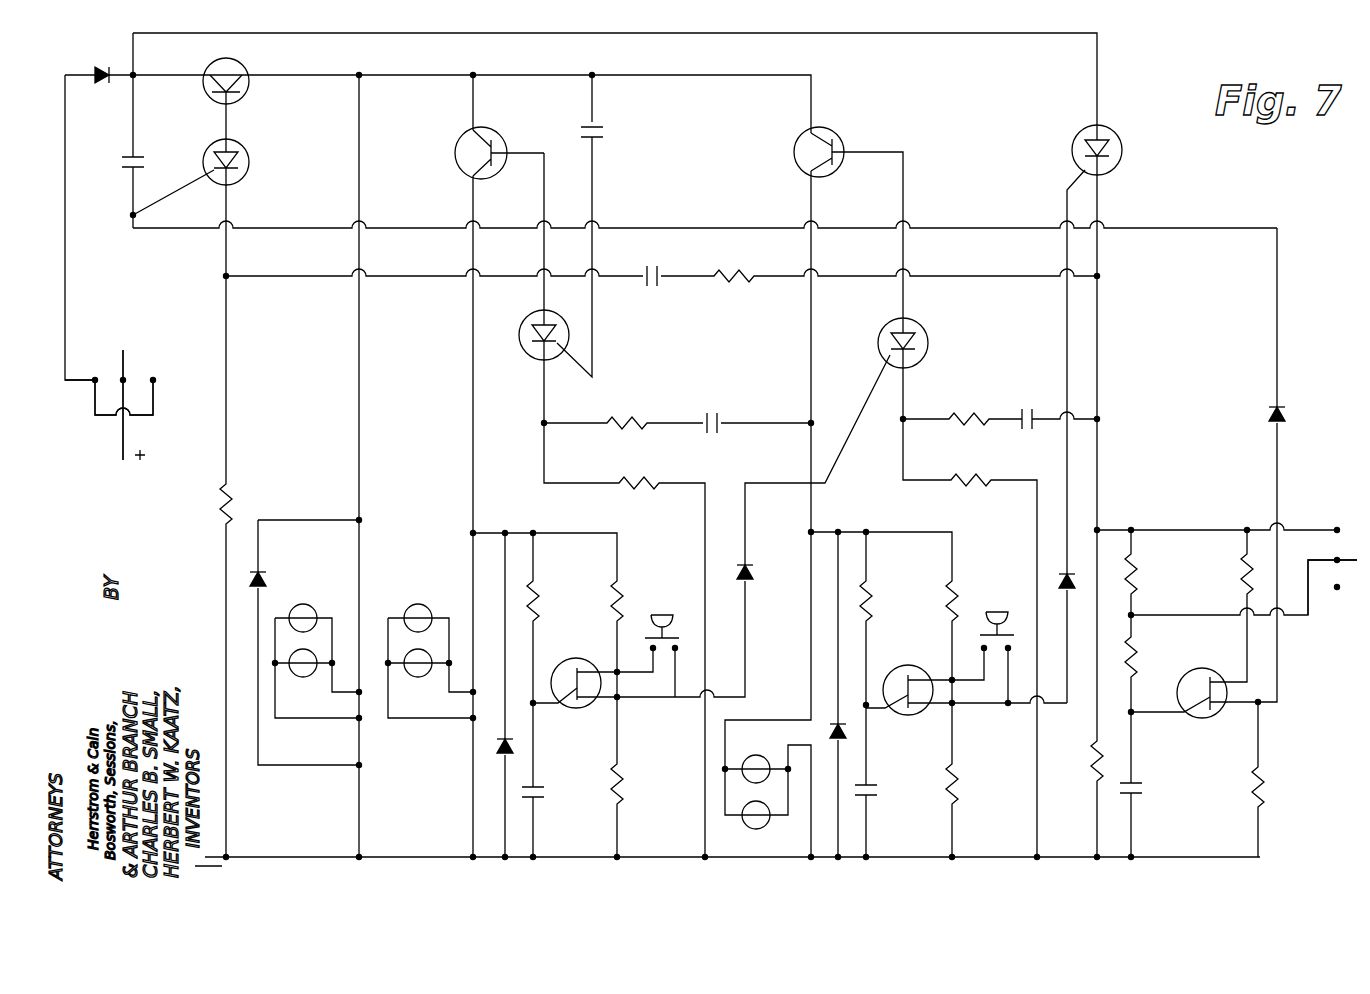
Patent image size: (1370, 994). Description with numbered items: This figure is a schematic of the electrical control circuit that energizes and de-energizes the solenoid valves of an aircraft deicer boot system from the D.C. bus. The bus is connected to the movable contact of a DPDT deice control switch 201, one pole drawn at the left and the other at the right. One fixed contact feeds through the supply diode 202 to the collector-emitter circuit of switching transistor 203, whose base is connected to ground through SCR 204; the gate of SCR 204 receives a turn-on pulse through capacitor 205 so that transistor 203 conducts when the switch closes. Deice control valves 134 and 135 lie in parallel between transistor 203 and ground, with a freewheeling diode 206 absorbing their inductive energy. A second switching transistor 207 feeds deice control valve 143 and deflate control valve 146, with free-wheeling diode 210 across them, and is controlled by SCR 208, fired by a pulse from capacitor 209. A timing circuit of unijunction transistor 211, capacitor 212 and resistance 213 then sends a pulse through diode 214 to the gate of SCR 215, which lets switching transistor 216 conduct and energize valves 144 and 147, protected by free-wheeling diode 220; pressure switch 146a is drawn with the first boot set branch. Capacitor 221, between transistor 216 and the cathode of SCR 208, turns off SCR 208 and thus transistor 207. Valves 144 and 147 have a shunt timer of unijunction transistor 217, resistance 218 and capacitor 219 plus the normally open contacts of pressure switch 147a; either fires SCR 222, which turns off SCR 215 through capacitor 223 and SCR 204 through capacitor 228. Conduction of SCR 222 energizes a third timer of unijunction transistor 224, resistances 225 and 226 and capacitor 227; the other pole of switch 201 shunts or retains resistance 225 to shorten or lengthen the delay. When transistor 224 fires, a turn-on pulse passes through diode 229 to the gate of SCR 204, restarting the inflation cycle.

The DPDT deice control switch 201 is at (146, 414).
The supply diode 202 is at (104, 84).
The switching transistor 203 is at (250, 64).
The SCR 204 is at (249, 165).
The capacitor 205 is at (126, 172).
The freewheeling diode 206 is at (266, 582).
The second switching transistor 207 is at (498, 132).
The SCR 208 is at (530, 352).
The capacitor 209 is at (604, 132).
The free-wheeling diode 210 is at (495, 747).
The unijunction transistor 211 is at (588, 640).
The capacitor 212 is at (545, 792).
The resistance 213 is at (540, 602).
The diode 214 is at (750, 582).
The SCR 215 is at (927, 330).
The switching transistor 216 is at (836, 135).
The unijunction transistor 217 is at (912, 665).
The resistance 218 is at (872, 602).
The capacitor 219 is at (876, 790).
The free-wheeling diode 220 is at (847, 732).
The capacitor 221 is at (714, 408).
The SCR 222 is at (1120, 155).
The capacitor 223 is at (1032, 388).
The unijunction transistor 224 is at (1200, 718).
The resistance 225 is at (1138, 573).
The resistance 226 is at (1138, 655).
The capacitor 227 is at (1142, 788).
The capacitor 228 is at (655, 287).
The diode 229 is at (1263, 412).
The deice control valve 134 is at (300, 604).
The deice control valve 135 is at (300, 677).
The deice control valve 143 is at (418, 604).
The deflate control valve 146 is at (418, 677).
The pressure control valve 144 is at (754, 755).
The deflation control valve 147 is at (748, 826).
The pressure switch 146a is at (662, 614).
The pressure switch 147a is at (997, 612).